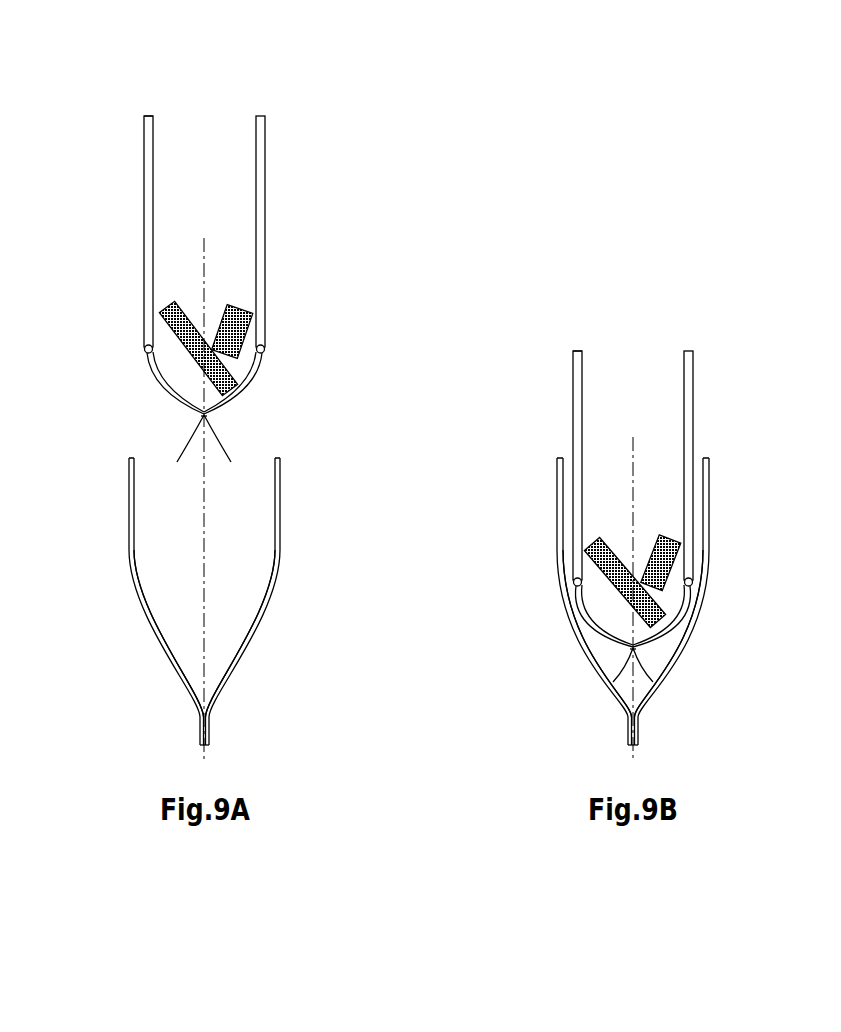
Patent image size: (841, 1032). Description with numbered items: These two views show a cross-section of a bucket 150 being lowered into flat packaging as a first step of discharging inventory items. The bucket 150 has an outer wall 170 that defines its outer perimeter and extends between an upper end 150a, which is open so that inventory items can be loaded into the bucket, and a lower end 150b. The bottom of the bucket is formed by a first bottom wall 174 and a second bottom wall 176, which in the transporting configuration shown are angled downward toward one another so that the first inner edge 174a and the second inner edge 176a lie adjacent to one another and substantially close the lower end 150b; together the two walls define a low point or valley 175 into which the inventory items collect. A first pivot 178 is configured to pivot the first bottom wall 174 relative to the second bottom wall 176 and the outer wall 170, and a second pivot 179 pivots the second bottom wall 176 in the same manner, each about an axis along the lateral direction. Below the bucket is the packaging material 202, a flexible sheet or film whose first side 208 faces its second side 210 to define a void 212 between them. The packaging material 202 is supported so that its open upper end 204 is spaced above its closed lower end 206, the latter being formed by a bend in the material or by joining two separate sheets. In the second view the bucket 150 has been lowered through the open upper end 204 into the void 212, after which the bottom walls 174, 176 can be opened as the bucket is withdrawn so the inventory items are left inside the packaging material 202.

In FIG. 9A, the bucket 150 is at (326, 232).
In FIG. 9B, the bucket 150 is at (741, 377).
In FIG. 9A, the upper end of the bucket 150a is at (140, 118).
In FIG. 9B, the upper end of the bucket 150a is at (570, 352).
In FIG. 9A, the lower end of the bucket 150b is at (188, 422).
In FIG. 9B, the lower end of the bucket 150b is at (617, 655).
In FIG. 9A, the outer wall 170 is at (144, 232).
In FIG. 9B, the outer wall 170 is at (573, 466).
In FIG. 9A, the first bottom wall 174 is at (162, 388).
In FIG. 9B, the first bottom wall 174 is at (588, 618).
In FIG. 9A, the first inner edge 174a is at (177, 450).
In FIG. 9B, the first inner edge 174a is at (613, 682).
In FIG. 9A, the valley 175 is at (197, 400).
In FIG. 9B, the valley 175 is at (632, 581).
In FIG. 9A, the second bottom wall 176 is at (245, 392).
In FIG. 9B, the second bottom wall 176 is at (684, 608).
In FIG. 9A, the second inner edge 176a is at (234, 450).
In FIG. 9B, the second inner edge 176a is at (653, 676).
In FIG. 9A, the first pivot 178 is at (145, 347).
In FIG. 9B, the first pivot 178 is at (573, 582).
In FIG. 9A, the second pivot 179 is at (266, 349).
In FIG. 9B, the second pivot 179 is at (693, 583).
In FIG. 9A, the packaging material 202 is at (132, 577).
In FIG. 9B, the packaging material 202 is at (557, 530).
In FIG. 9A, the open upper end 204 is at (287, 455).
In FIG. 9B, the open upper end 204 is at (719, 455).
In FIG. 9A, the closed lower end 206 is at (217, 746).
In FIG. 9B, the closed lower end 206 is at (646, 748).
In FIG. 9A, the first side 208 is at (167, 657).
In FIG. 9B, the first side 208 is at (618, 690).
In FIG. 9A, the second side 210 is at (240, 663).
In FIG. 9B, the second side 210 is at (648, 692).
In FIG. 9A, the void 212 is at (234, 600).
In FIG. 9B, the void 212 is at (648, 657).